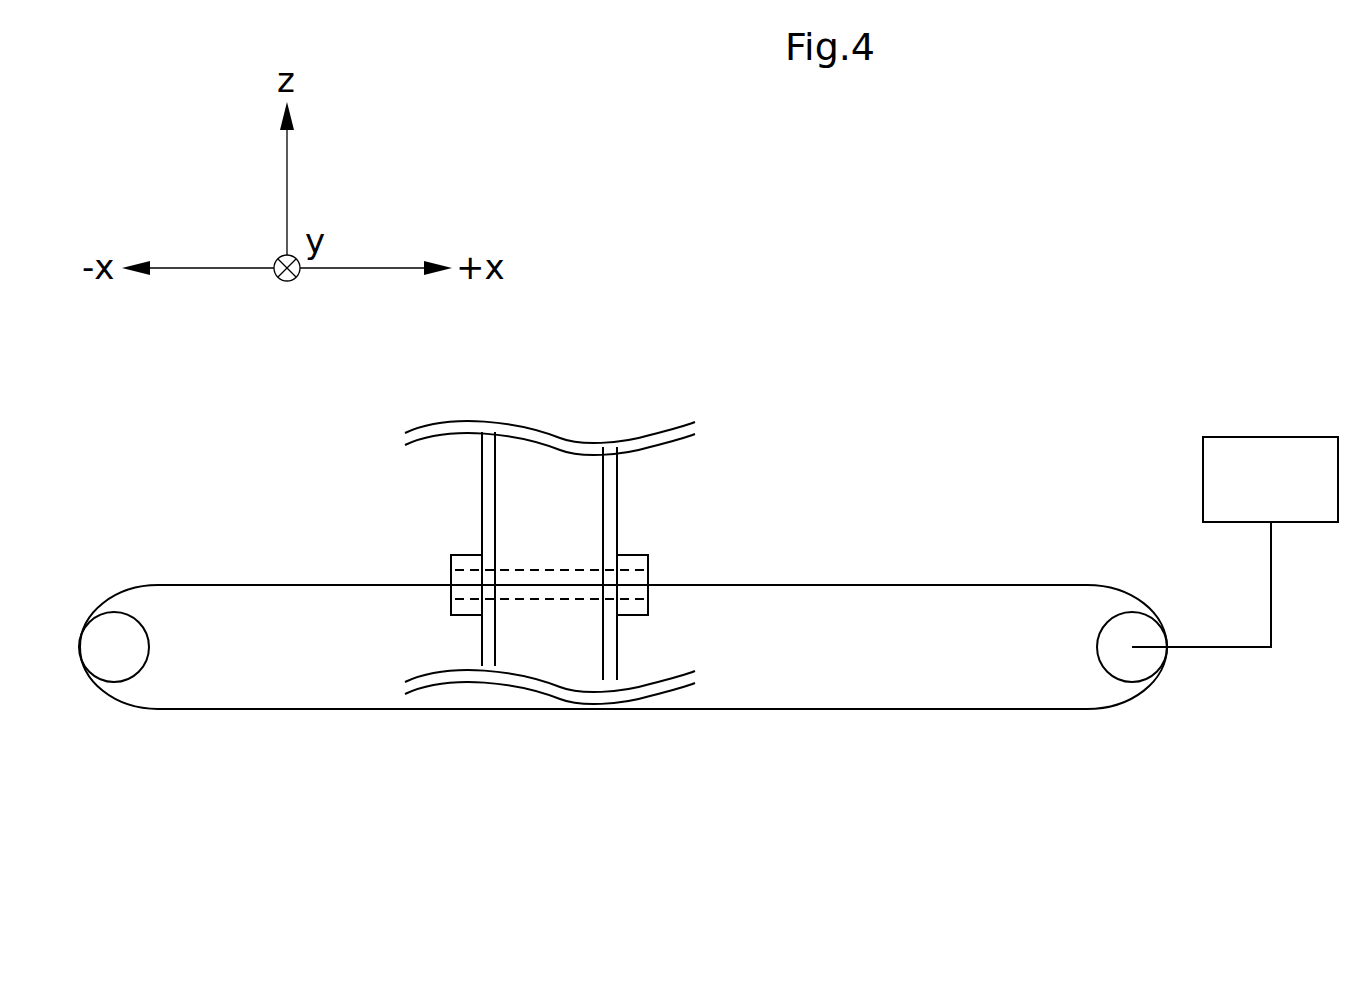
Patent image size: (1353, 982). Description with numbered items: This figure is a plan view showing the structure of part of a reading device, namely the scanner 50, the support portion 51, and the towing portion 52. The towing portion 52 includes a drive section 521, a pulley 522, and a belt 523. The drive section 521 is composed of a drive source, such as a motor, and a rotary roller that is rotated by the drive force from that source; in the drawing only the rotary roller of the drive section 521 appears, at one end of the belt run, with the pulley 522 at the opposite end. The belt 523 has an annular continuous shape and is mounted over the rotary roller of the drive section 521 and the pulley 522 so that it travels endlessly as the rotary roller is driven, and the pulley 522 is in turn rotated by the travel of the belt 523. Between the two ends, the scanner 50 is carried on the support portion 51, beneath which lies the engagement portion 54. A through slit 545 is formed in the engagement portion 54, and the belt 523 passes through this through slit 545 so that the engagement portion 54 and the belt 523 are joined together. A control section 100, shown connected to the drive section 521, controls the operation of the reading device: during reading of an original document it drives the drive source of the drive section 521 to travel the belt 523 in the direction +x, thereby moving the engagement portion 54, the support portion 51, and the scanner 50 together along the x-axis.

The scanner 50 is at (600, 559).
The support portion 51 is at (620, 542).
The towing portion 52 is at (623, 636).
The engagement portion 54 is at (466, 555).
The through slit 545 is at (575, 602).
The control section 100 is at (1297, 437).
The drive section 521 is at (1110, 682).
The pulley 522 is at (137, 682).
The belt 523 is at (723, 710).